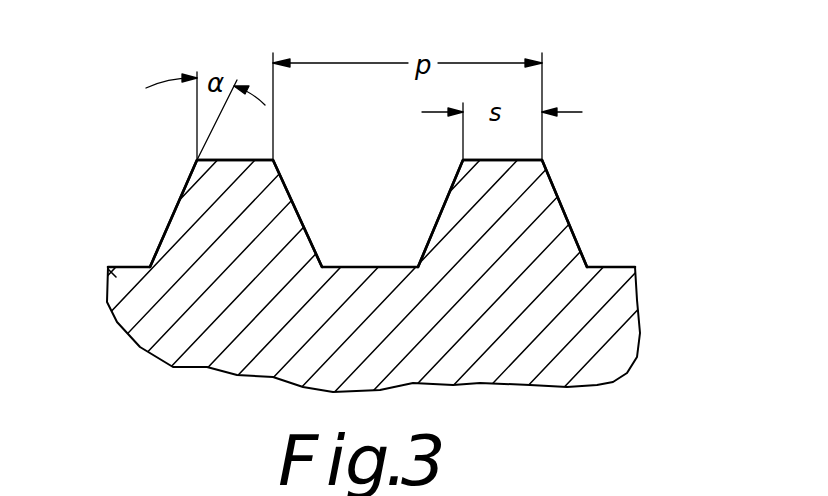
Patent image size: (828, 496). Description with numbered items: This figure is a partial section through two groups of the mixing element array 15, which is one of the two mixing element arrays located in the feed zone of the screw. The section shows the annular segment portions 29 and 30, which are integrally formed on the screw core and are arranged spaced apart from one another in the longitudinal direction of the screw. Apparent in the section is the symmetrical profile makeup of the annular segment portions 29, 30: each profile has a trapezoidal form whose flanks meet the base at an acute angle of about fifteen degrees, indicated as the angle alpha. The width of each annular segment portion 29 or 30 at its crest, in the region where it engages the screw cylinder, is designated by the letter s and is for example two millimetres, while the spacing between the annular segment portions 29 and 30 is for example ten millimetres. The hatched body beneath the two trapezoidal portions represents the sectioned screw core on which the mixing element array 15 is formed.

The mixing element array 15 is at (582, 240).
The annular segment portion 29 is at (556, 186).
The annular segment portion 30 is at (300, 208).